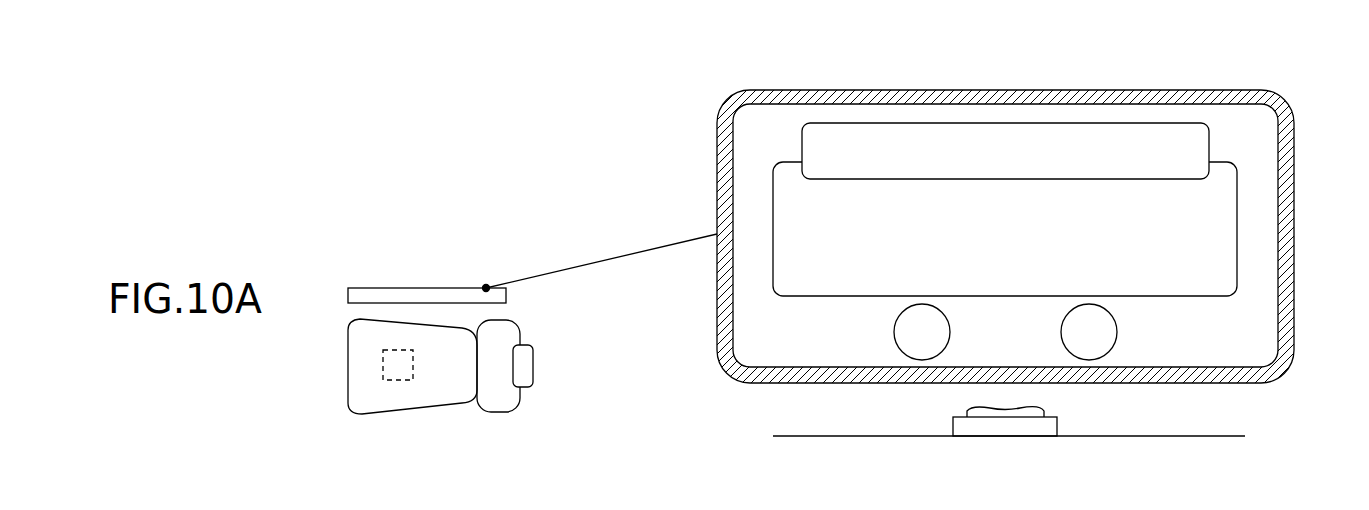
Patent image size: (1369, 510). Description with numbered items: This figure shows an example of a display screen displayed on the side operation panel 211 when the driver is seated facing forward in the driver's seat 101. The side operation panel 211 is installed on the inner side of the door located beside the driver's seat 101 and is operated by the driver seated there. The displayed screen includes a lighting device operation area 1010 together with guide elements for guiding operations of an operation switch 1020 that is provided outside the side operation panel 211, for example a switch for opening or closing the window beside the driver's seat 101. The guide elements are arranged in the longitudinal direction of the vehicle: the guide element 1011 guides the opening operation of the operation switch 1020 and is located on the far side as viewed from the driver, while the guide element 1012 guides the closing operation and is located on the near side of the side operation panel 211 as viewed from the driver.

The side operation panel 211 is at (427, 288).
The lighting device operation area 1010 is at (1003, 122).
The guide element 1011 is at (921, 360).
The guide element 1012 is at (1089, 360).
The operation switch 1020 is at (1007, 437).
The driver's seat 101 is at (535, 365).